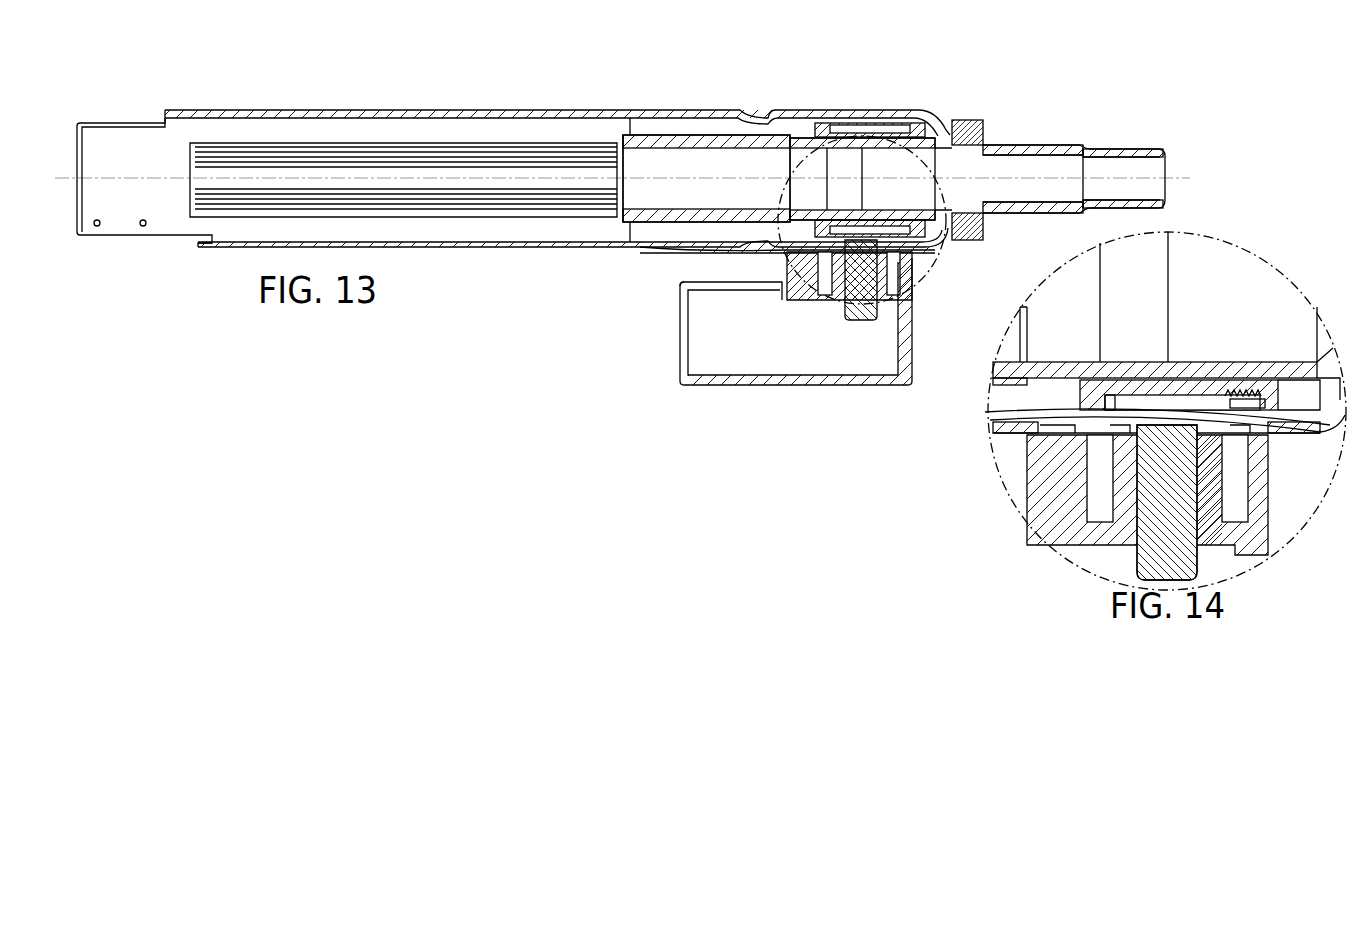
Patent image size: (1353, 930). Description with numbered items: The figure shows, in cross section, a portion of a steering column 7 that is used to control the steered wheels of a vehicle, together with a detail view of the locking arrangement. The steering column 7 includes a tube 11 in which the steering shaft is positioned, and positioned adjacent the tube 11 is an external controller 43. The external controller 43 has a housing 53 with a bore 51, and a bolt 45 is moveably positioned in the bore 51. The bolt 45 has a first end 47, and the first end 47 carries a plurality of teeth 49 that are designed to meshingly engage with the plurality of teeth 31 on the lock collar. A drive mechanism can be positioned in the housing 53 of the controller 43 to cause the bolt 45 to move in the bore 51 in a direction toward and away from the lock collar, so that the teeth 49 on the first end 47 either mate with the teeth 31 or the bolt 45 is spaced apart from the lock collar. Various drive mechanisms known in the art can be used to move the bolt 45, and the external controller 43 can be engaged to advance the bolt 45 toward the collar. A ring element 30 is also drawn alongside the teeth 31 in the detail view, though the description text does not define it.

In FIG. 13, the steering column 7 is at (966, 72).
In FIG. 13, the tube 11 is at (698, 110).
In FIG. 13, the retaining ring 30 is at (872, 130).
In FIG. 14, the retaining ring 30 is at (1188, 398).
In FIG. 13, the plurality of teeth 31 is at (843, 128).
In FIG. 14, the plurality of teeth 31 is at (1205, 404).
In FIG. 13, the external controller 43 is at (700, 300).
In FIG. 13, the bolt 45 is at (857, 300).
In FIG. 14, the bolt 45 is at (1150, 555).
In FIG. 13, the first end 47 is at (770, 252).
In FIG. 14, the first end 47 is at (1183, 442).
In FIG. 14, the plurality of teeth 49 is at (1010, 411).
In FIG. 13, the bore 51 is at (846, 300).
In FIG. 14, the bore 51 is at (1135, 520).
In FIG. 13, the housing 53 is at (705, 392).